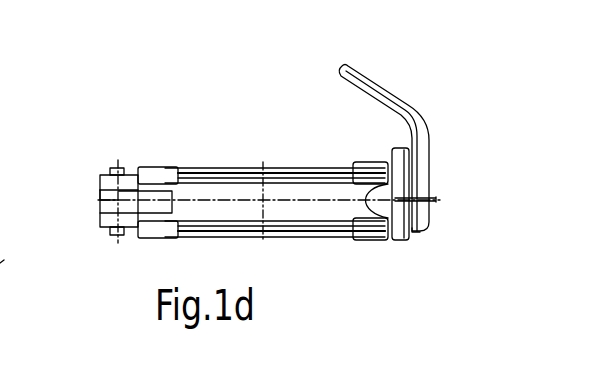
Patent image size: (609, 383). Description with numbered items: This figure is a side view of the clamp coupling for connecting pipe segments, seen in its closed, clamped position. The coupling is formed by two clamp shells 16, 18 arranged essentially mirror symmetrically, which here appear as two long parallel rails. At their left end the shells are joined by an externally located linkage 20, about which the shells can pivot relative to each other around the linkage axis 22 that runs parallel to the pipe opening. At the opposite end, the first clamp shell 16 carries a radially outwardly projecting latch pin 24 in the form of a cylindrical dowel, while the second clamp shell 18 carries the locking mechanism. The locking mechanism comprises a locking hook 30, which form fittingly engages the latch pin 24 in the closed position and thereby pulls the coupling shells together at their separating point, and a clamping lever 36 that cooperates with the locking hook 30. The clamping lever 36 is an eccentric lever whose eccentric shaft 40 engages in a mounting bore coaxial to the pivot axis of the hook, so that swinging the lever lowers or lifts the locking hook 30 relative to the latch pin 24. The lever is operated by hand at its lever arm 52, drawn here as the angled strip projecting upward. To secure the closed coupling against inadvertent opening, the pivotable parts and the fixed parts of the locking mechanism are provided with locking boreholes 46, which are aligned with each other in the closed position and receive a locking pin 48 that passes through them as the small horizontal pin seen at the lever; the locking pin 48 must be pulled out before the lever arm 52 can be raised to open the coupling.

The first clamp shell 16 is at (208, 166).
The second clamp shell 18 is at (208, 166).
The linkage 20 is at (132, 178).
The linkage axis 22 is at (100, 193).
The latch pin 24 is at (18, 262).
The locking hook 30 is at (403, 232).
The clamping lever 36 is at (413, 133).
The eccentric shaft 40 is at (417, 232).
The locking boreholes 46 is at (393, 170).
The locking pin 48 is at (433, 199).
The lever arm 52 is at (363, 77).